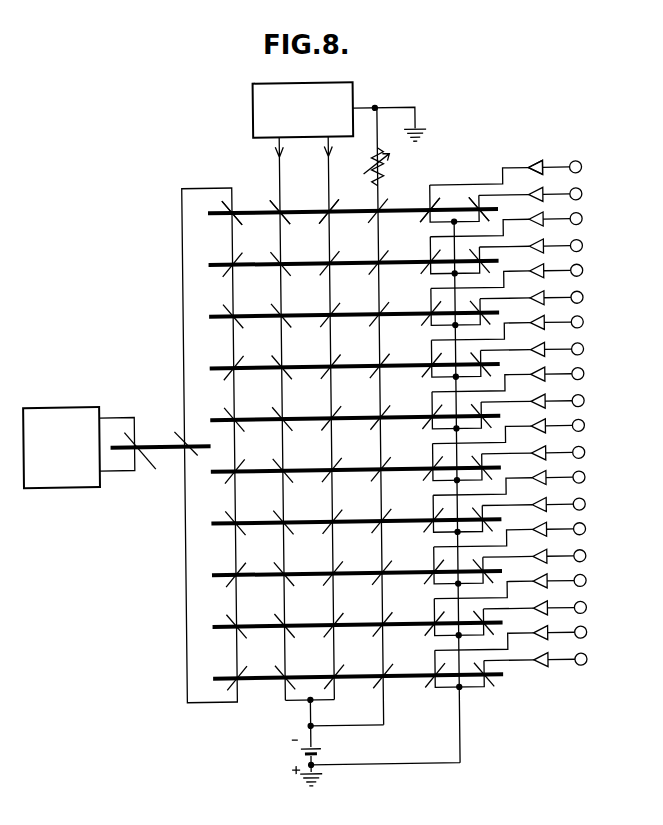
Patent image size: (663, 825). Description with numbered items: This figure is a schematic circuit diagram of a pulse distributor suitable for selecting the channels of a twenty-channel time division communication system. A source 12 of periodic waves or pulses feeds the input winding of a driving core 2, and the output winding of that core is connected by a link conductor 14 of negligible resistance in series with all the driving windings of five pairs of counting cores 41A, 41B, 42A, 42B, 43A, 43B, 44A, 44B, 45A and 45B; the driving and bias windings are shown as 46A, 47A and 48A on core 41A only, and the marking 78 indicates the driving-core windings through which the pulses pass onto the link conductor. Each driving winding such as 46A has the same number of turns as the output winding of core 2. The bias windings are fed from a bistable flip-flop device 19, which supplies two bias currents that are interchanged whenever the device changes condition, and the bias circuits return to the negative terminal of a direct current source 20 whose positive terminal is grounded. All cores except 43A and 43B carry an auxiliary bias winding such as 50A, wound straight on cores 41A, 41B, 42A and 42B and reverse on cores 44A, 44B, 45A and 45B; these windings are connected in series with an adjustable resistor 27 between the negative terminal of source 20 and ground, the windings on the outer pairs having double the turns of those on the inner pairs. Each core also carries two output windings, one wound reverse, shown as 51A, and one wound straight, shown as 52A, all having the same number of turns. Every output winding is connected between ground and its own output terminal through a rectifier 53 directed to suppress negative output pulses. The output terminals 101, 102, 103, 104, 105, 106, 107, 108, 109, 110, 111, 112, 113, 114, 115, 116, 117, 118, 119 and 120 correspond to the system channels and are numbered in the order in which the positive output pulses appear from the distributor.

The link conductor 14 is at (182, 304).
The bistable flip-flop device 19 is at (354, 96).
The adjustable resistor 27 is at (372, 158).
The auxiliary bias winding 50A is at (380, 206).
The driving winding 46A is at (229, 198).
The bias winding 47A is at (278, 206).
The bias winding 48A is at (327, 206).
The output winding 51A is at (434, 204).
The output winding 52A is at (468, 198).
The rectifier 53 is at (532, 170).
The source of periodic waves or pulses 12 is at (64, 483).
The driving core 2 is at (143, 446).
The rectifier 78 is at (197, 444).
The direct current source 20 is at (316, 757).
The counting core 41A is at (220, 218).
The counting core 41B is at (220, 270).
The counting core 42A is at (220, 321).
The counting core 42B is at (220, 373).
The counting core 43A is at (220, 425).
The counting core 43B is at (220, 476).
The counting core 44A is at (220, 528).
The counting core 44B is at (220, 580).
The counting core 45A is at (220, 632).
The counting core 45B is at (347, 673).
The output terminal 101 is at (574, 194).
The output terminal 102 is at (574, 246).
The output terminal 103 is at (575, 298).
The output terminal 104 is at (575, 349).
The output terminal 105 is at (576, 401).
The output terminal 106 is at (577, 453).
The output terminal 107 is at (577, 504).
The output terminal 108 is at (578, 556).
The output terminal 109 is at (578, 608).
The output terminal 110 is at (579, 660).
The output terminal 111 is at (574, 219).
The output terminal 112 is at (573, 167).
The output terminal 113 is at (575, 322).
The output terminal 114 is at (575, 271).
The output terminal 115 is at (576, 426).
The output terminal 116 is at (576, 374).
The output terminal 117 is at (577, 529).
The output terminal 118 is at (577, 477).
The output terminal 119 is at (579, 633).
The output terminal 120 is at (578, 581).